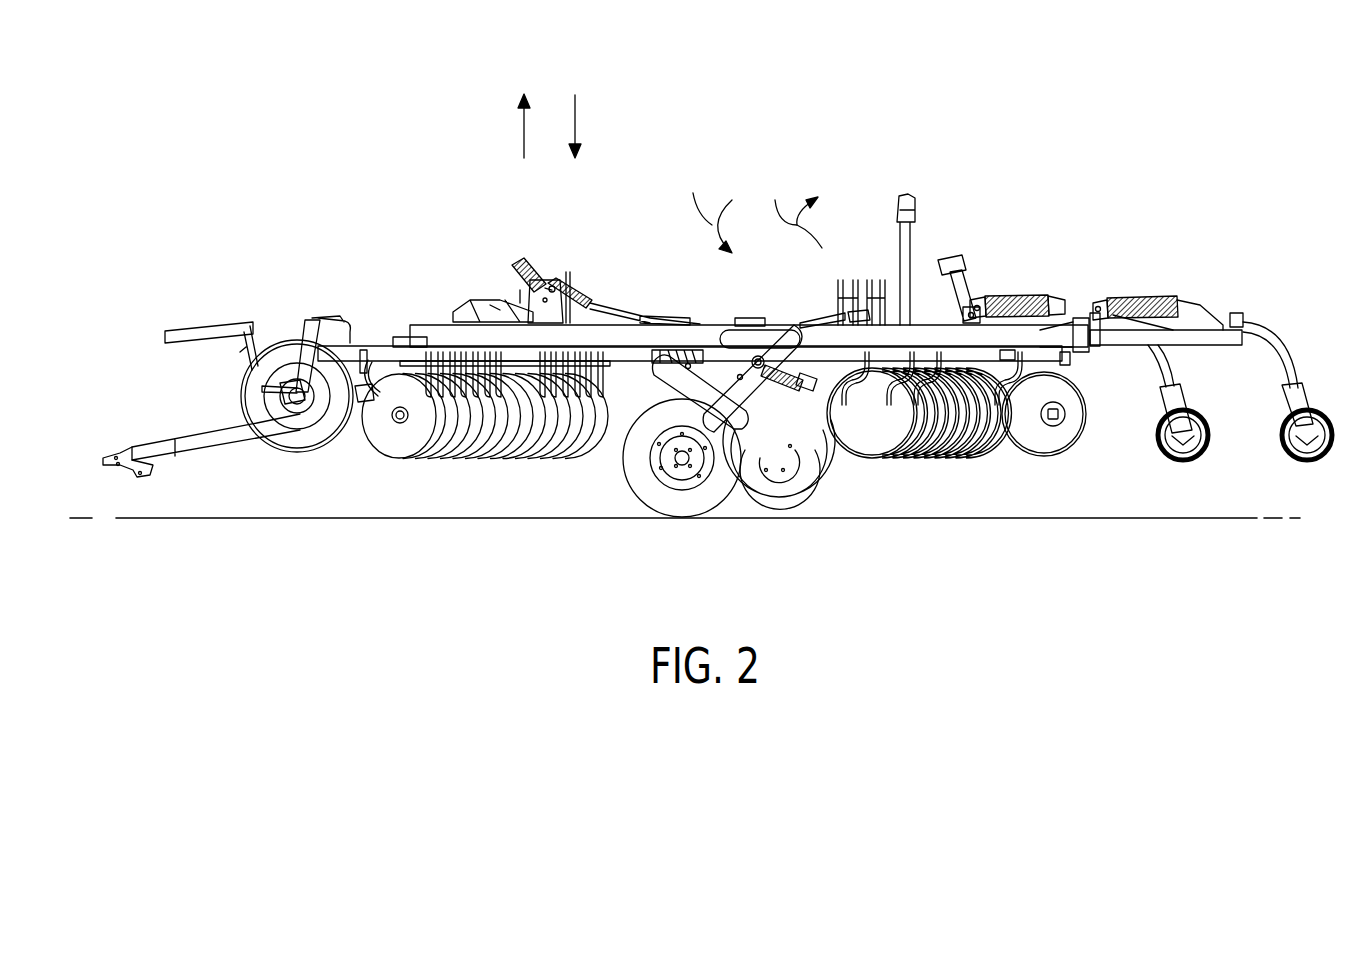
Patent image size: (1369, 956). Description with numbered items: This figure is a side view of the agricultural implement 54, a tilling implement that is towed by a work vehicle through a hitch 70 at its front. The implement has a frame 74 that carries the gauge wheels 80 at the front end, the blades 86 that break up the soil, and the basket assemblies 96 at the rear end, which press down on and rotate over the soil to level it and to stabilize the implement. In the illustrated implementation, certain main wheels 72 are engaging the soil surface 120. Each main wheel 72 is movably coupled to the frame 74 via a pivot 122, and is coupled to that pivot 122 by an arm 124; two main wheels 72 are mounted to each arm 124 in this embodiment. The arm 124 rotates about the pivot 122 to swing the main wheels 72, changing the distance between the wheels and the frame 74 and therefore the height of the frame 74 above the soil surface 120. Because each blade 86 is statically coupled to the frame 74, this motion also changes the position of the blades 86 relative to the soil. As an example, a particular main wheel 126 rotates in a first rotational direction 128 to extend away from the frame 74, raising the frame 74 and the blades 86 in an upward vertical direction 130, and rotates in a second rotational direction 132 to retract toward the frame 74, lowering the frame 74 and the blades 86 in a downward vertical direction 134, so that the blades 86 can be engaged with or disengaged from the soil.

The agricultural implement 54 is at (780, 213).
The hitch 70 is at (192, 448).
The main wheels 72 is at (831, 492).
The frame 74 is at (710, 325).
The gauge wheels 80 is at (302, 448).
The blades 86 is at (398, 445).
The basket assemblies 96 is at (1300, 462).
The soil surface 120 is at (376, 519).
The pivot 122 is at (758, 360).
The arm 124 is at (707, 398).
The particular main wheel 126 is at (627, 458).
The first rotational direction 128 is at (705, 206).
The upward vertical direction 130 is at (522, 132).
The second rotational direction 132 is at (792, 208).
The downward vertical direction 134 is at (578, 120).